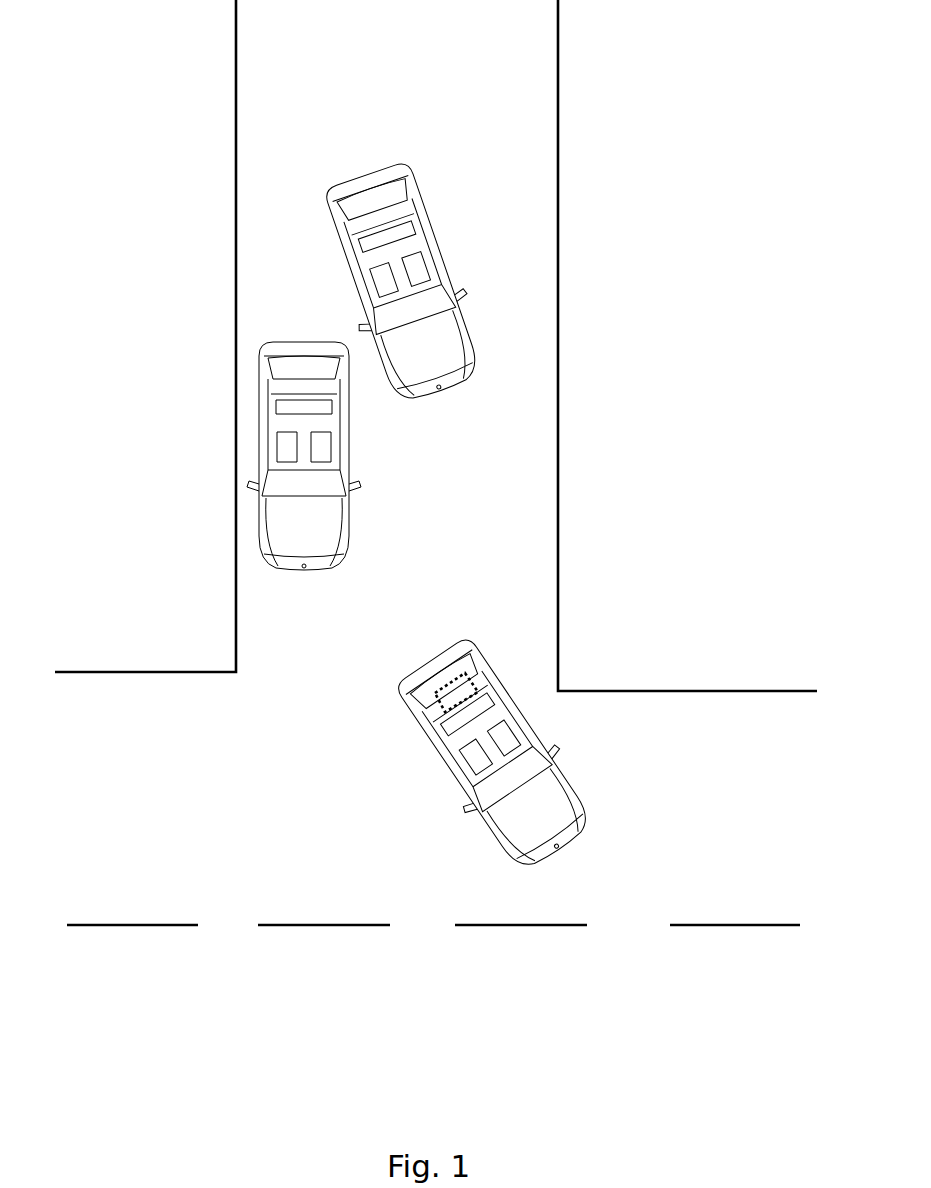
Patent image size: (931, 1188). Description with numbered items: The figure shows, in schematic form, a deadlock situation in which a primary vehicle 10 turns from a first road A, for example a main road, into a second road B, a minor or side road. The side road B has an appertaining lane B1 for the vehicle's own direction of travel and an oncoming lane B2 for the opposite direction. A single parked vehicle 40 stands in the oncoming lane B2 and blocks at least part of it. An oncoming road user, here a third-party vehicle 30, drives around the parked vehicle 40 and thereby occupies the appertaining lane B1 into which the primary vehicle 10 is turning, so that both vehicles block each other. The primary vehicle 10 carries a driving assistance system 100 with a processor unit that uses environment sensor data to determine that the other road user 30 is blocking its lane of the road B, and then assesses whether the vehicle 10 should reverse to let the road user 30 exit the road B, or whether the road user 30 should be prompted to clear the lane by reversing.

The primary vehicle 10 is at (636, 821).
The third-party vehicle 30 is at (508, 360).
The parked vehicle 40 is at (395, 512).
The driving assistance system 100 is at (440, 707).
The first road A is at (174, 820).
The second road B is at (416, 81).
The appertaining lane B1 is at (505, 180).
The oncoming lane B2 is at (278, 155).